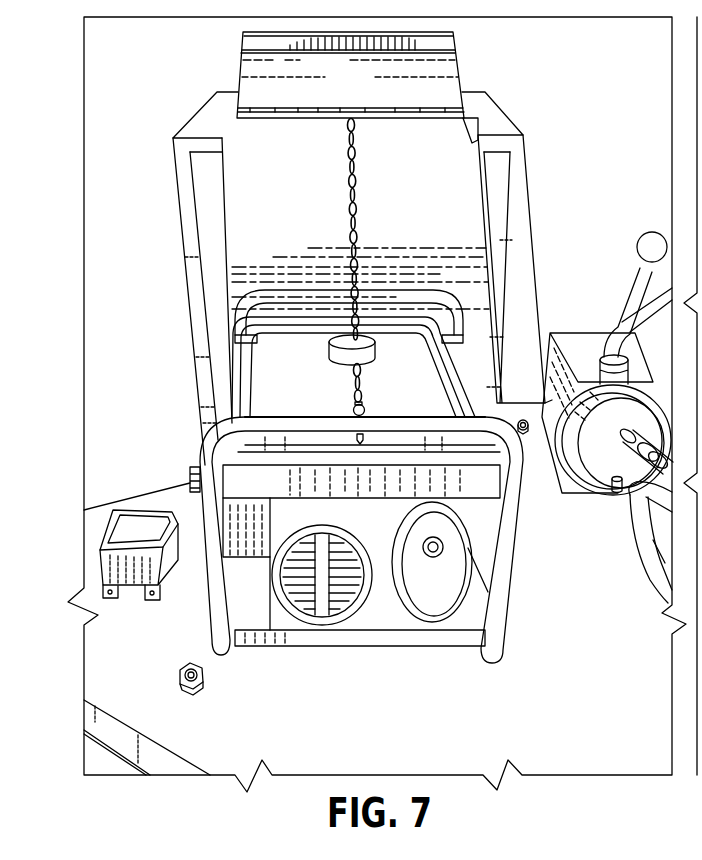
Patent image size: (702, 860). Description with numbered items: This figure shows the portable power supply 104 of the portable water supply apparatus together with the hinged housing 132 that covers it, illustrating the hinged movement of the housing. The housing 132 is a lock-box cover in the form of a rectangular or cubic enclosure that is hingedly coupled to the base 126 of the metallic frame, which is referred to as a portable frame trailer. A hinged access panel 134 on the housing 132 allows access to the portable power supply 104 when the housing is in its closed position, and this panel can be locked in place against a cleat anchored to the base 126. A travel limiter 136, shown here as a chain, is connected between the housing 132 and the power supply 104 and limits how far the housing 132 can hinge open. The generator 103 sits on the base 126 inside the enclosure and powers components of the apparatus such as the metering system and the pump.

The generator 103 is at (395, 620).
The power supply 104 is at (388, 338).
The base 126 is at (587, 721).
The housing 132 is at (493, 122).
The hinged access panel 134 is at (367, 84).
The travel limiter 136 is at (356, 228).